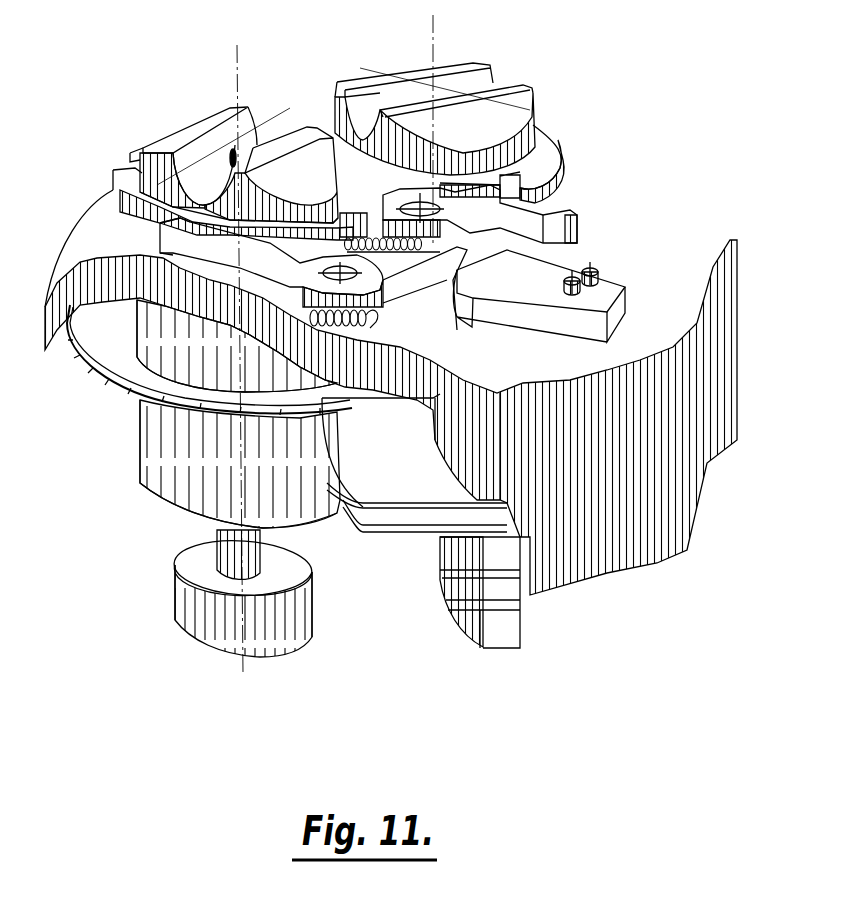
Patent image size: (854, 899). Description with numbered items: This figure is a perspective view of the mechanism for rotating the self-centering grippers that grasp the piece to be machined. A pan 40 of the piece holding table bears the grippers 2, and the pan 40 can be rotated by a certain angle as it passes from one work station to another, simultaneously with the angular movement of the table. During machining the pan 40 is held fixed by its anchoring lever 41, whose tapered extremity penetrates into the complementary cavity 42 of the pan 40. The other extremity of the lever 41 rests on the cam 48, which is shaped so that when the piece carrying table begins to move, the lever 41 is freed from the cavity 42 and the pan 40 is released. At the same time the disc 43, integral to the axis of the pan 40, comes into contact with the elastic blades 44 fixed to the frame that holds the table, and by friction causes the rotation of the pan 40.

The grippers 2 is at (235, 140).
The pan 40 is at (137, 188).
The anchoring lever 41 is at (470, 265).
The complementary cavity 42 is at (353, 225).
The disc 43 is at (133, 387).
The elastic blades 44 is at (388, 532).
The cam 48 is at (537, 270).